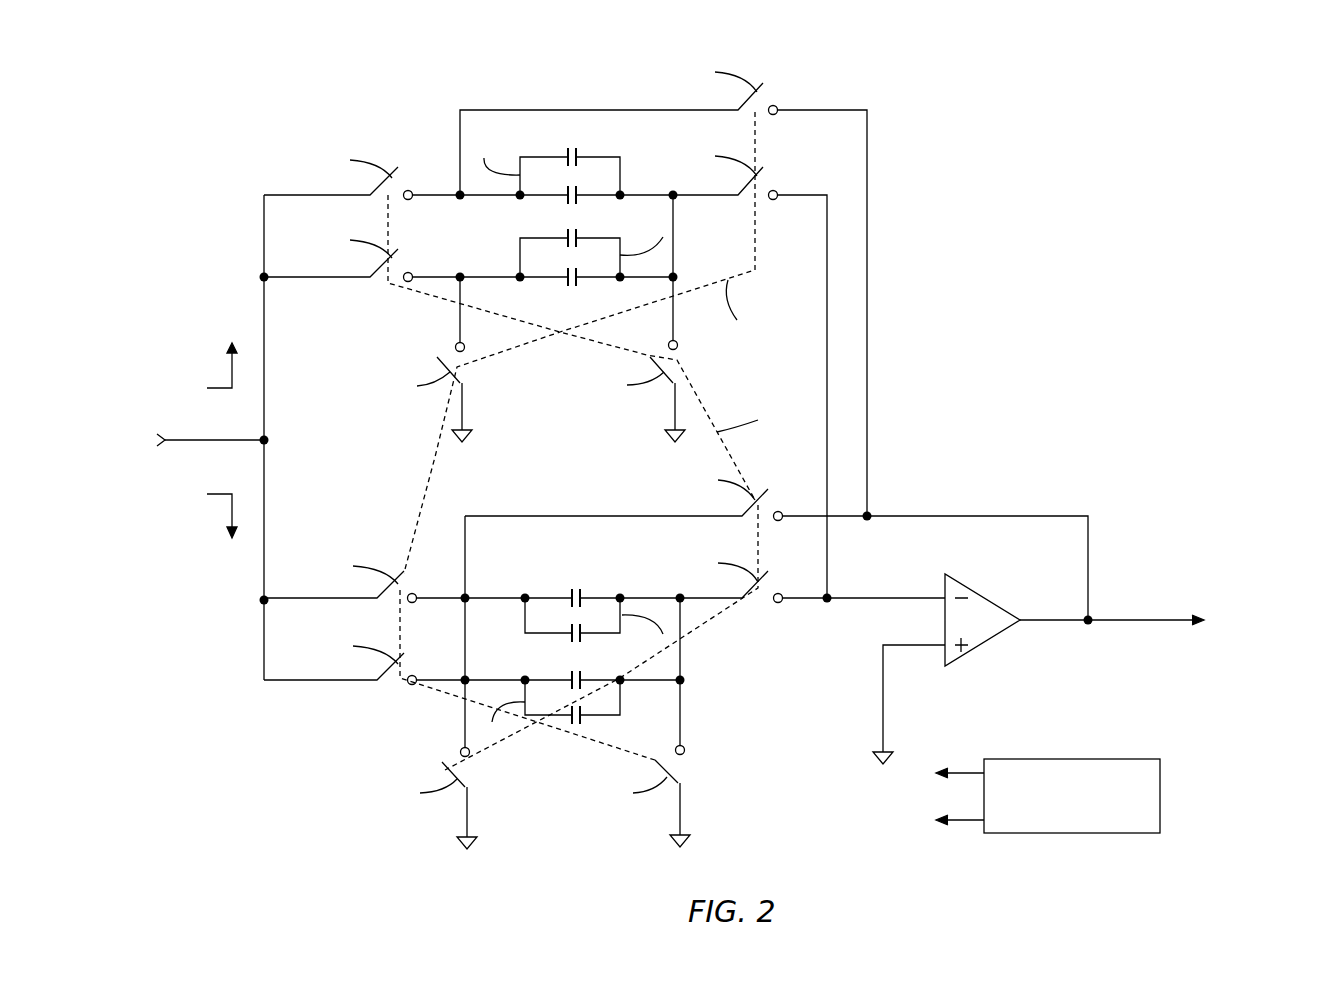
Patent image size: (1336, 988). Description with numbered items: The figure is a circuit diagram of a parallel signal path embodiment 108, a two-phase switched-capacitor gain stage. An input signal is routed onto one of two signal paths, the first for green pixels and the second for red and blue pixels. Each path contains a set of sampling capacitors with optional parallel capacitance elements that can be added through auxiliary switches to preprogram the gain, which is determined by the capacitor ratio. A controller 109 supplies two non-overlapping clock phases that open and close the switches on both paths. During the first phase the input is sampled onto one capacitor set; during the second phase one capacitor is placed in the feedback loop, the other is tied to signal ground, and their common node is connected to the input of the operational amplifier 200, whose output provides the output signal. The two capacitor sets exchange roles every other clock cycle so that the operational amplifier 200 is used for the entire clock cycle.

The parallel signal path embodiment 108 is at (171, 140).
The operational amplifier 200 is at (980, 595).
The controller 109 is at (1127, 759).